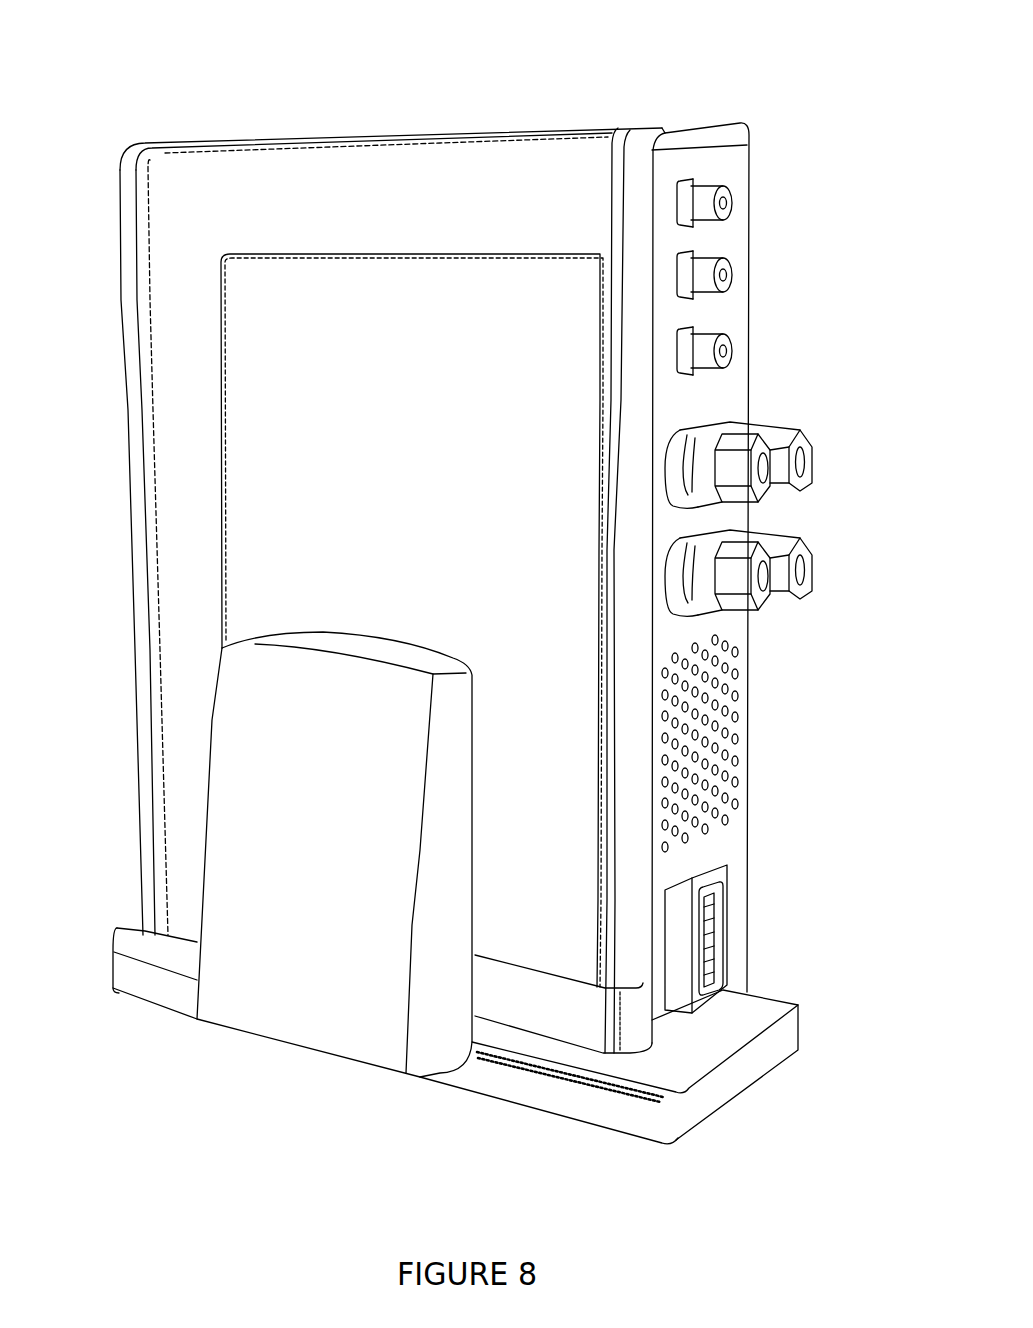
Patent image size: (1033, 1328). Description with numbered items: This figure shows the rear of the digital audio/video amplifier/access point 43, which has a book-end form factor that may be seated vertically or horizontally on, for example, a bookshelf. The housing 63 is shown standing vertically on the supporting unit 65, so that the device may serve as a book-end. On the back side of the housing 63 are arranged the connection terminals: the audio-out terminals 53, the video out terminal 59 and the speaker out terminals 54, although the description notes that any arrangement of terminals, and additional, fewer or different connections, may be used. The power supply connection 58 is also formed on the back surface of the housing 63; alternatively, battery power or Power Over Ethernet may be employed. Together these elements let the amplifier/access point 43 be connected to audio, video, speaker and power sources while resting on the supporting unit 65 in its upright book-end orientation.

The audio/video amplifier/access point 43 is at (688, 54).
The audio-out terminals 53 is at (732, 206).
The video out terminal 59 is at (733, 352).
The speaker out terminals 54 is at (803, 490).
The power supply connection 58 is at (717, 950).
The housing 63 is at (190, 405).
The supporting unit 65 is at (310, 1030).